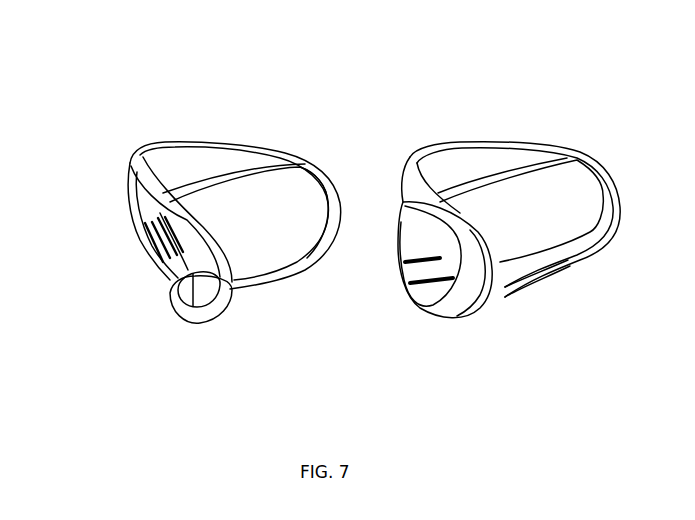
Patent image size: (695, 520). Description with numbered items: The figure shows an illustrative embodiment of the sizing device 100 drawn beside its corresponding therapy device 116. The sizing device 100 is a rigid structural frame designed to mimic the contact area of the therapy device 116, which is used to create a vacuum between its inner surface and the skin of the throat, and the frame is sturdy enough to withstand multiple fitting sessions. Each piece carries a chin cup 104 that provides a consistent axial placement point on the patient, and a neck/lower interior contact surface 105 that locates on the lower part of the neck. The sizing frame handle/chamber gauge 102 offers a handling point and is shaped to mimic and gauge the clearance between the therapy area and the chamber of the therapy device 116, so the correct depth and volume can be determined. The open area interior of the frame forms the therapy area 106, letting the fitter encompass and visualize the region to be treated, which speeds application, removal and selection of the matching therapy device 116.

The sizing device 100 is at (178, 331).
The sizing frame handle/chamber gauge 102 is at (142, 272).
The chin cup 104 is at (428, 163).
The neck/lower interior contact surface 105 is at (266, 282).
The interior open area 106 is at (283, 196).
The therapy device 116 is at (519, 118).